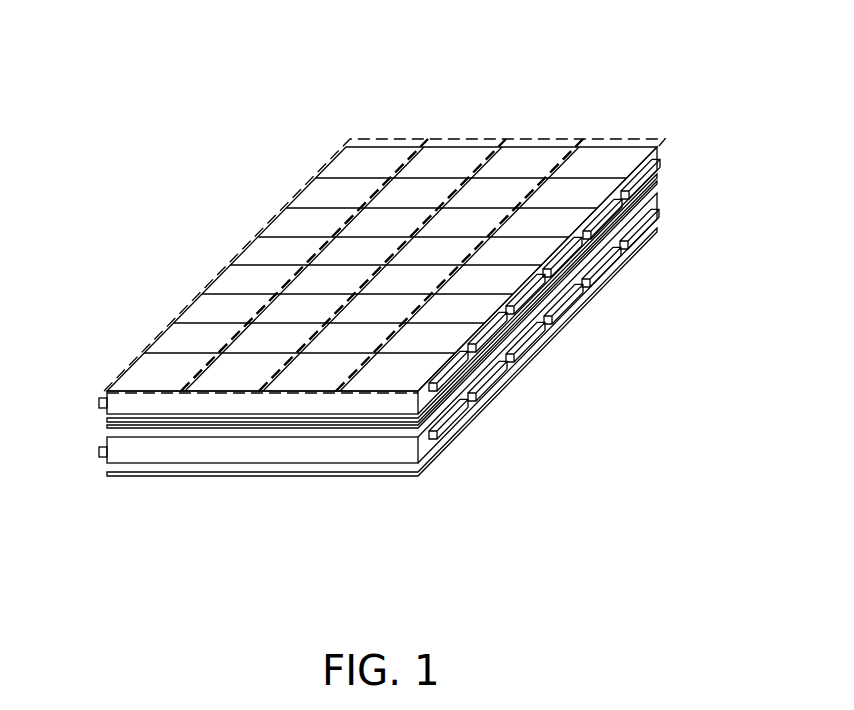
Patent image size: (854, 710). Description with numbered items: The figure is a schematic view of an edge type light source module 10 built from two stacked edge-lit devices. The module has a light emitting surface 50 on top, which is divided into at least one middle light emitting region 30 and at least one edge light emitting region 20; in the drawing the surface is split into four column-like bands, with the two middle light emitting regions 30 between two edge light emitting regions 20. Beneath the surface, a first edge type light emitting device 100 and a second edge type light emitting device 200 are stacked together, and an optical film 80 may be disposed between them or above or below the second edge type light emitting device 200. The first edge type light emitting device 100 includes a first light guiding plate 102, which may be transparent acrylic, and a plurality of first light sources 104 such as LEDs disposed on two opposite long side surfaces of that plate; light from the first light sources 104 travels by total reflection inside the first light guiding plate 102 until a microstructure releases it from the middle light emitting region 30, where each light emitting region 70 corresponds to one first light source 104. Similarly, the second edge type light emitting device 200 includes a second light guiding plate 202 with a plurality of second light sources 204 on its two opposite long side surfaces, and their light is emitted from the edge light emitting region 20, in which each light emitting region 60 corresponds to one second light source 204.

The edge type light source module 10 is at (676, 530).
The edge light emitting region 20 is at (387, 139).
The middle light emitting region 30 is at (463, 139).
The light emitting surface 50 is at (635, 50).
The light emitting region 60 is at (318, 197).
The light emitting region 70 is at (288, 313).
The optical film 80 is at (150, 473).
The first edge type light emitting device 100 is at (677, 142).
The first light guiding plate 102 is at (147, 402).
The first light sources 104 is at (99, 403).
The second edge type light emitting device 200 is at (690, 197).
The second light guiding plate 202 is at (368, 455).
The second light sources 204 is at (99, 452).